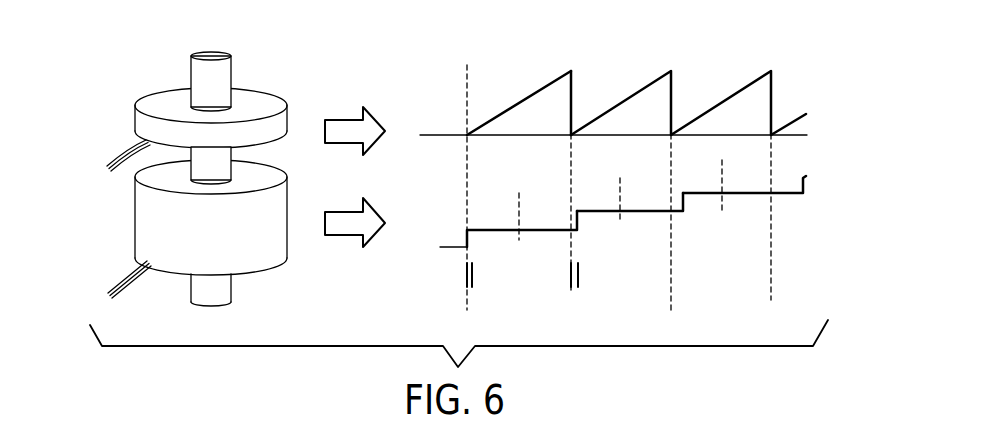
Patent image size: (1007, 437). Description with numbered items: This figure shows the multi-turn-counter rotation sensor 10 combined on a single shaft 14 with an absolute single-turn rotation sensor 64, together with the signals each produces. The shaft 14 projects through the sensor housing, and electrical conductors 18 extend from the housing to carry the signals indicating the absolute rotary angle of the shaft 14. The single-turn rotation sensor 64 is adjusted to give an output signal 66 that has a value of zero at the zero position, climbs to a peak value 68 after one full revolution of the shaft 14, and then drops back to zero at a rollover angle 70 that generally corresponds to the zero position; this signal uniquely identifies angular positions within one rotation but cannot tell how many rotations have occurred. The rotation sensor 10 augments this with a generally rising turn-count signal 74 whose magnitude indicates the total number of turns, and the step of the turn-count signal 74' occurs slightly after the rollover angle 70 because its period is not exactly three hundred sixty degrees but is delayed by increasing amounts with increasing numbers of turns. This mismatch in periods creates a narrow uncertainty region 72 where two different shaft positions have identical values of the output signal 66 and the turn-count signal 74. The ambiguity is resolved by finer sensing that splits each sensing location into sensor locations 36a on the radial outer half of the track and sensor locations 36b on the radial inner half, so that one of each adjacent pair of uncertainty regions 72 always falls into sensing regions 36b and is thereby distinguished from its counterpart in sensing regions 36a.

The rotation sensor 10 is at (176, 188).
The shaft 14 is at (190, 73).
The electrical conductors 18 is at (128, 274).
The sensor locations 36a is at (591, 204).
The sensor locations 36b is at (643, 193).
The absolute single-turn rotation sensor 64 is at (134, 122).
The output signal 66 is at (613, 166).
The rising ramp of sawtooth 68 is at (573, 72).
The rollover angle 70 is at (571, 171).
The uncertainty region 72 is at (469, 295).
The turn-count signal 74 is at (637, 203).
The step of step signal 74' is at (655, 238).